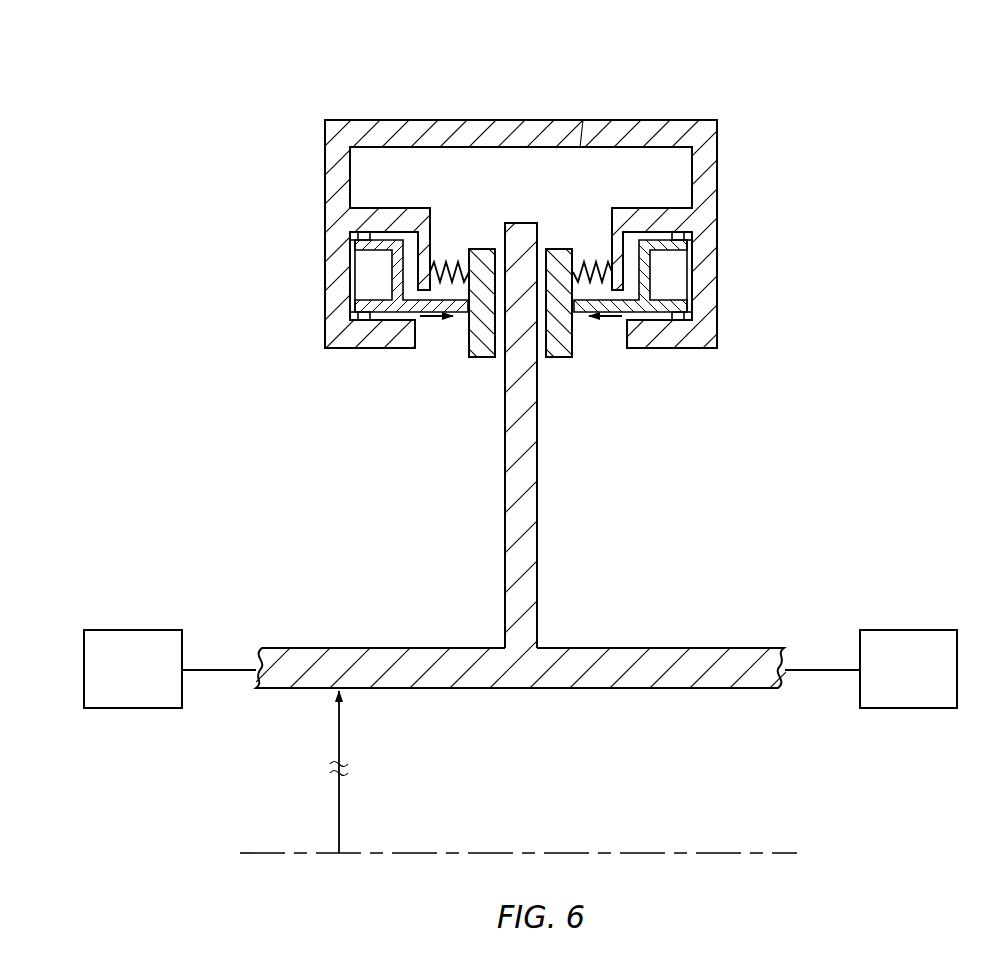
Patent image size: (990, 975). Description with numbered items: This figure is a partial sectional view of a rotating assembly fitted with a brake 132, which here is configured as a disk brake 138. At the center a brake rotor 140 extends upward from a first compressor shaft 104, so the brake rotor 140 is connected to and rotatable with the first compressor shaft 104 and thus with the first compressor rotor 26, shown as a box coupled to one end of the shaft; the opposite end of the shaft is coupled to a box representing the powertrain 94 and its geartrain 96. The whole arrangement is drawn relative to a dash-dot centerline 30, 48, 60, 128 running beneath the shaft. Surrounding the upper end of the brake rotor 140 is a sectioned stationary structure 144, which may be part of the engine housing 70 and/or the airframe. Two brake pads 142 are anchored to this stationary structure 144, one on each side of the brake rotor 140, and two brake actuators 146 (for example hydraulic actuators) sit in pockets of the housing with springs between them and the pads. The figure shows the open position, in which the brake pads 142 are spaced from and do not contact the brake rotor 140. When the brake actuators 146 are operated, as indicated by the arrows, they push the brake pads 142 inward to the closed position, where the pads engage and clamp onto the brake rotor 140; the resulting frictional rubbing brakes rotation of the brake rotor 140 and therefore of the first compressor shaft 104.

The first compressor rotor 26 is at (147, 682).
The axis of rotation 30 is at (614, 791).
The axis 48 is at (614, 791).
The axis 60 is at (614, 791).
The axis 128 is at (782, 855).
The engine housing 70 is at (527, 188).
The stationary structure 144 is at (641, 117).
The powertrain 94 is at (871, 669).
The geartrain 96 is at (936, 682).
The first compressor shaft 104 is at (700, 690).
The brake 132 is at (527, 230).
The disk brake 138 is at (775, 93).
The brake rotor 140 is at (546, 498).
The brake pads 142 is at (471, 373).
The brake actuators 146 is at (355, 277).